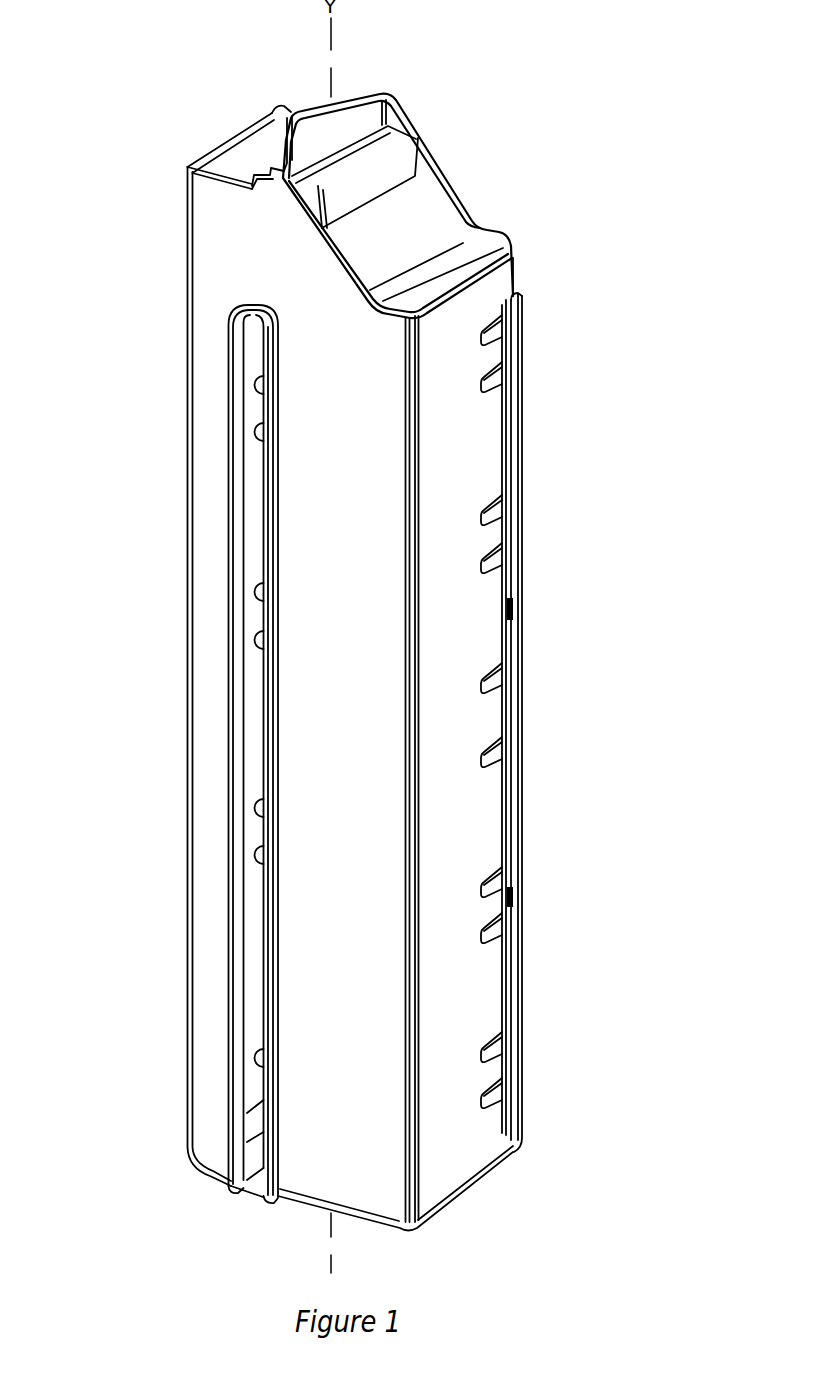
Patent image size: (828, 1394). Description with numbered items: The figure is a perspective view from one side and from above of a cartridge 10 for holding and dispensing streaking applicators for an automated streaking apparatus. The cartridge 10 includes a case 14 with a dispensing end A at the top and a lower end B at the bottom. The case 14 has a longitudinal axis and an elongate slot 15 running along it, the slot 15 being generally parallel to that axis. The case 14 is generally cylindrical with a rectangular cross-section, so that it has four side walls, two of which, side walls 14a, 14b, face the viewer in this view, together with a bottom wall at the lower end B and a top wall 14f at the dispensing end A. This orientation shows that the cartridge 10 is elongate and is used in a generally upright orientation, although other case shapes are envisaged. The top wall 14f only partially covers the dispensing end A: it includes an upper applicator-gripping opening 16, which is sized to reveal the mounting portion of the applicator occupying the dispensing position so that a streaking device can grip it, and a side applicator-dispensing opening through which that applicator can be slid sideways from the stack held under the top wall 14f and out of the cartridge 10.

The cartridge 10 is at (371, 656).
The case 14 is at (213, 728).
The side wall 14a is at (483, 850).
The side wall 14b is at (372, 855).
The top wall 14f is at (422, 238).
The elongate slot 15 is at (253, 958).
The upper applicator-gripping opening 16 is at (243, 171).
The dispensing end A is at (478, 211).
The lower end B is at (535, 1127).